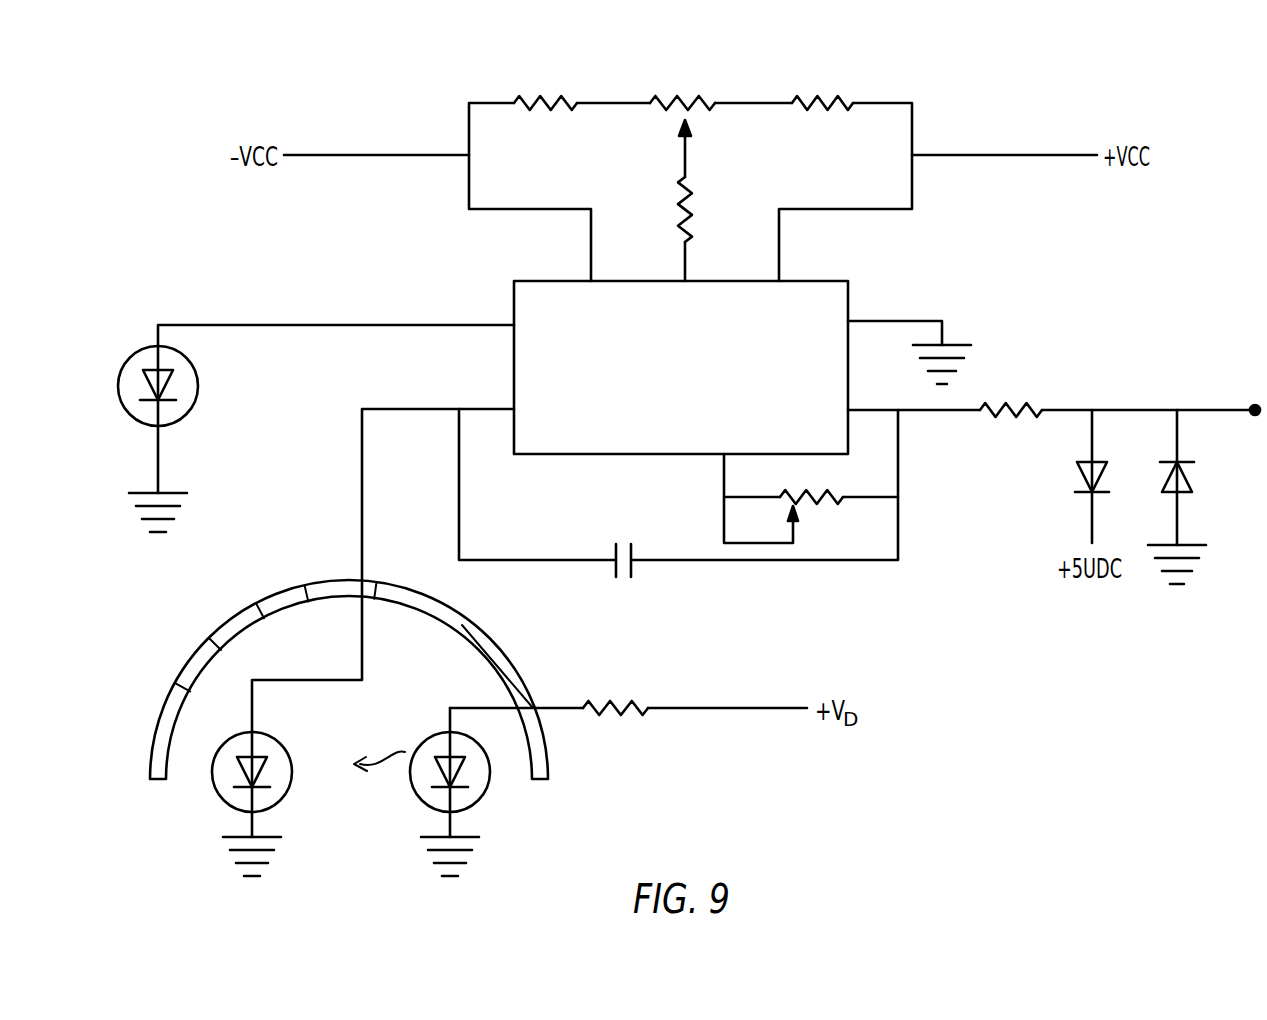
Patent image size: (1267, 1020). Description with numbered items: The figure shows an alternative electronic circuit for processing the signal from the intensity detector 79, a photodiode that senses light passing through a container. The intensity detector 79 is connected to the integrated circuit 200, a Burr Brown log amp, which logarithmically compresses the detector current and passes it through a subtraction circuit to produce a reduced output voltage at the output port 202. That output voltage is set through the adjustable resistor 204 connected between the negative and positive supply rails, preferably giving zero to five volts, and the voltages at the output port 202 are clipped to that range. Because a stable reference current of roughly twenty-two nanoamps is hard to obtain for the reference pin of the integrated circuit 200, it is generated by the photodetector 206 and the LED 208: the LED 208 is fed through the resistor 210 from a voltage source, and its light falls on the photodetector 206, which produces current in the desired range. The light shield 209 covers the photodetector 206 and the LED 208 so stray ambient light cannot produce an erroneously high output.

The intensity detector 79 is at (197, 391).
The integrated circuit 200 is at (852, 291).
The output port 202 is at (1253, 404).
The adjustable resistor 204 is at (683, 100).
The photodetector 206 is at (292, 782).
The LED 208 is at (448, 733).
The light shield 209 is at (283, 592).
The resistor 210 is at (635, 700).